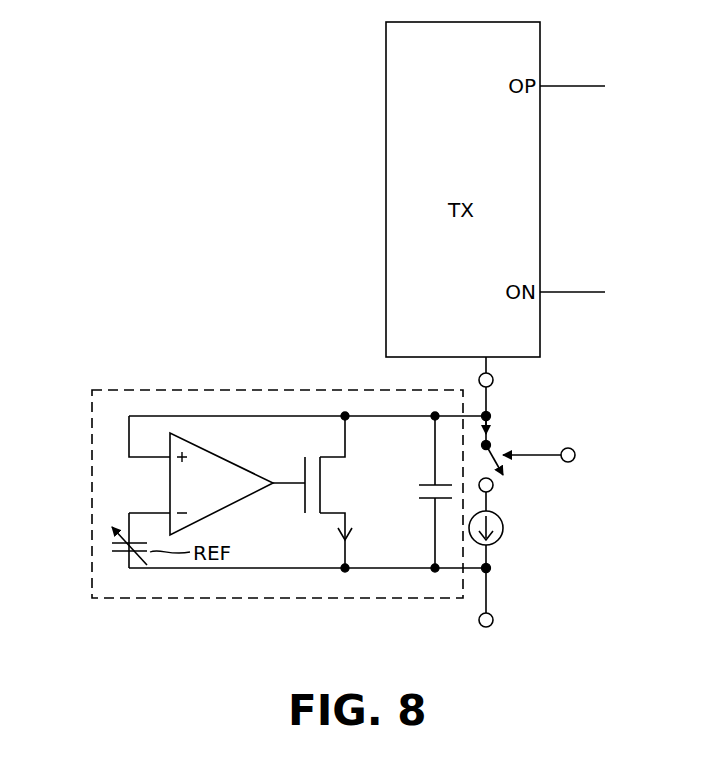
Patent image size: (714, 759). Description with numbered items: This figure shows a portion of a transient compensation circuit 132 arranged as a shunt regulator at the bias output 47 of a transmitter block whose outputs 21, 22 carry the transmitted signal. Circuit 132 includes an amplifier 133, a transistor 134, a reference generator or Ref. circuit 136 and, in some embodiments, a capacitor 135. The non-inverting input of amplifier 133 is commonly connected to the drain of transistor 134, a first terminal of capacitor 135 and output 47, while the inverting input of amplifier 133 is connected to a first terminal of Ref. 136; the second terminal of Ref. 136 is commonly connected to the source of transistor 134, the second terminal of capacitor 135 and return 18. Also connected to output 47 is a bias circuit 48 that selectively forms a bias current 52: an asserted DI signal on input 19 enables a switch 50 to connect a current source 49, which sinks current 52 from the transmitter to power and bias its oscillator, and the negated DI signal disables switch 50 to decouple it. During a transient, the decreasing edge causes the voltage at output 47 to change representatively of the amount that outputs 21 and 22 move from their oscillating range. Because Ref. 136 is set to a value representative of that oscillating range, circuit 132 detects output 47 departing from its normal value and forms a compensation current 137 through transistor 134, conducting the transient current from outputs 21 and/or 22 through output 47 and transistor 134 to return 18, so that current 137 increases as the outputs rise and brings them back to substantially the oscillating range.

The return 18 is at (493, 618).
The input 19 is at (575, 455).
The output 21 is at (555, 85).
The output 22 is at (556, 291).
The bias output 47 is at (494, 380).
The bias circuit 48 is at (574, 482).
The current source 49 is at (503, 521).
The switch 50 is at (507, 475).
The bias current 52 is at (492, 420).
The transient compensation circuit 132 is at (211, 598).
The amplifier 133 is at (225, 455).
The transistor 134 is at (330, 490).
The capacitor 135 is at (424, 480).
The reference generator circuit 136 is at (108, 558).
The current 137 is at (352, 540).